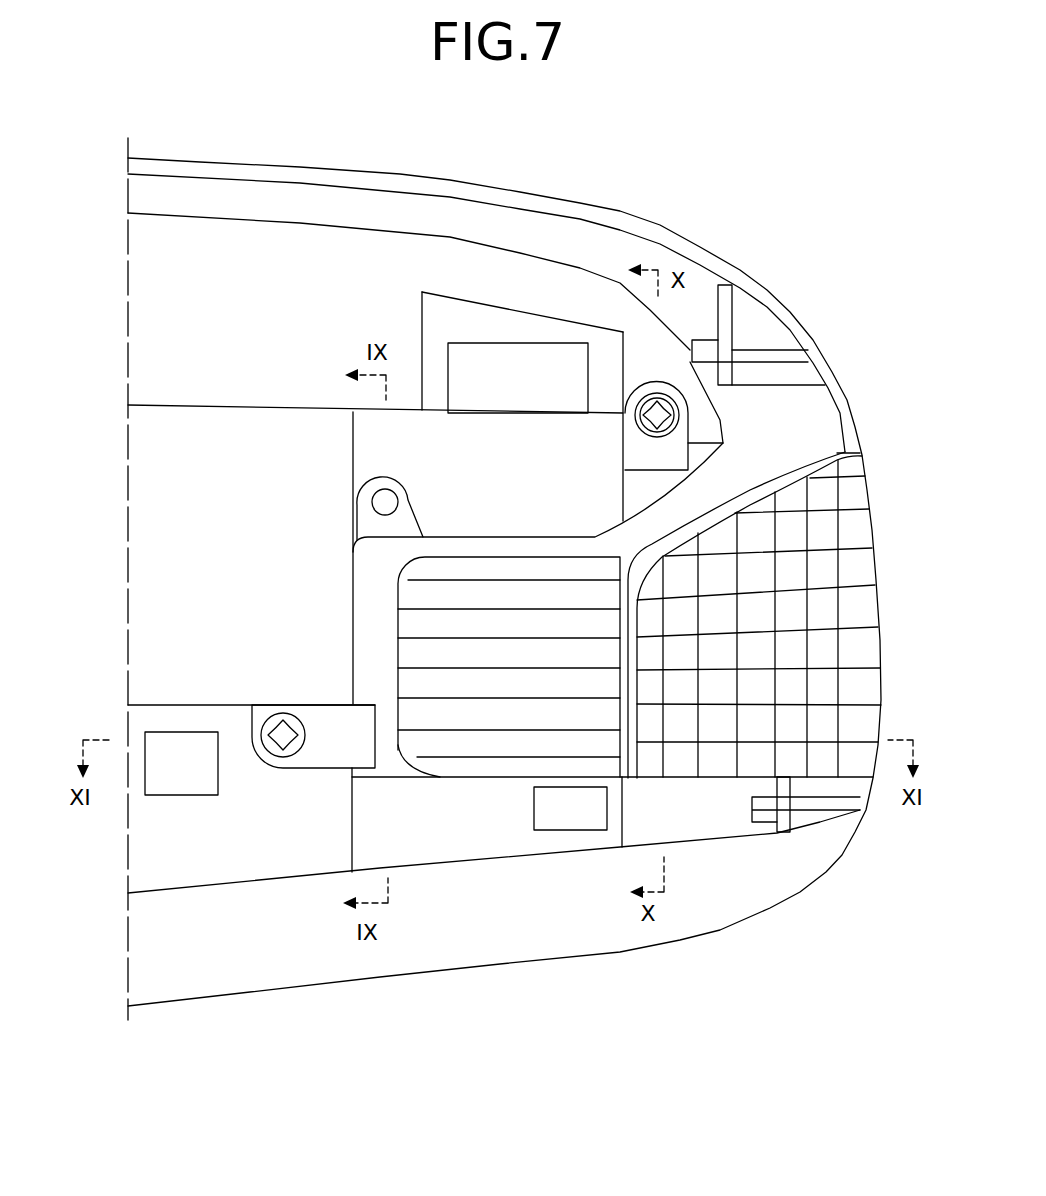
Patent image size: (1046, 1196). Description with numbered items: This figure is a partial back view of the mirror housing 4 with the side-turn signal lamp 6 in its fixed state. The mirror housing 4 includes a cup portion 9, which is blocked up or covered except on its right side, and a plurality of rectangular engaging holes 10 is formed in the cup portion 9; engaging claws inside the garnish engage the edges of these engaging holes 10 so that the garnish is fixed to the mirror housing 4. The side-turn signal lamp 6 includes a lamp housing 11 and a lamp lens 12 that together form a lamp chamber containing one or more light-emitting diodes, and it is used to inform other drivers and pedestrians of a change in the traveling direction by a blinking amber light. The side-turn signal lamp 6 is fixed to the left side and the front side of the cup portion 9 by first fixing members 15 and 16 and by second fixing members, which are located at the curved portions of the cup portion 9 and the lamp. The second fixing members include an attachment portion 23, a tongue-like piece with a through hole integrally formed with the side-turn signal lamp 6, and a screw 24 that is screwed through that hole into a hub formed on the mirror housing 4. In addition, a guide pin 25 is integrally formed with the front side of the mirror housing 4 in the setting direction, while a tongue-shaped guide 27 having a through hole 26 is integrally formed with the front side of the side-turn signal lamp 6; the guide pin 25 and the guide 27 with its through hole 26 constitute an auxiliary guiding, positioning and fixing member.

The mirror housing 4 is at (263, 156).
The side-turn signal lamp 6 is at (886, 561).
The cup portion 9 is at (403, 270).
The engaging holes 10 is at (480, 343).
The lamp housing 11 is at (790, 423).
The lamp lens 12 is at (853, 492).
The first fixing member 15 is at (768, 345).
The first fixing member 16 is at (736, 300).
The attachment portion 23 is at (628, 405).
The screw 24 is at (657, 405).
The guide pin 25 is at (394, 511).
The through hole 26 is at (378, 495).
The guide 27 is at (363, 520).